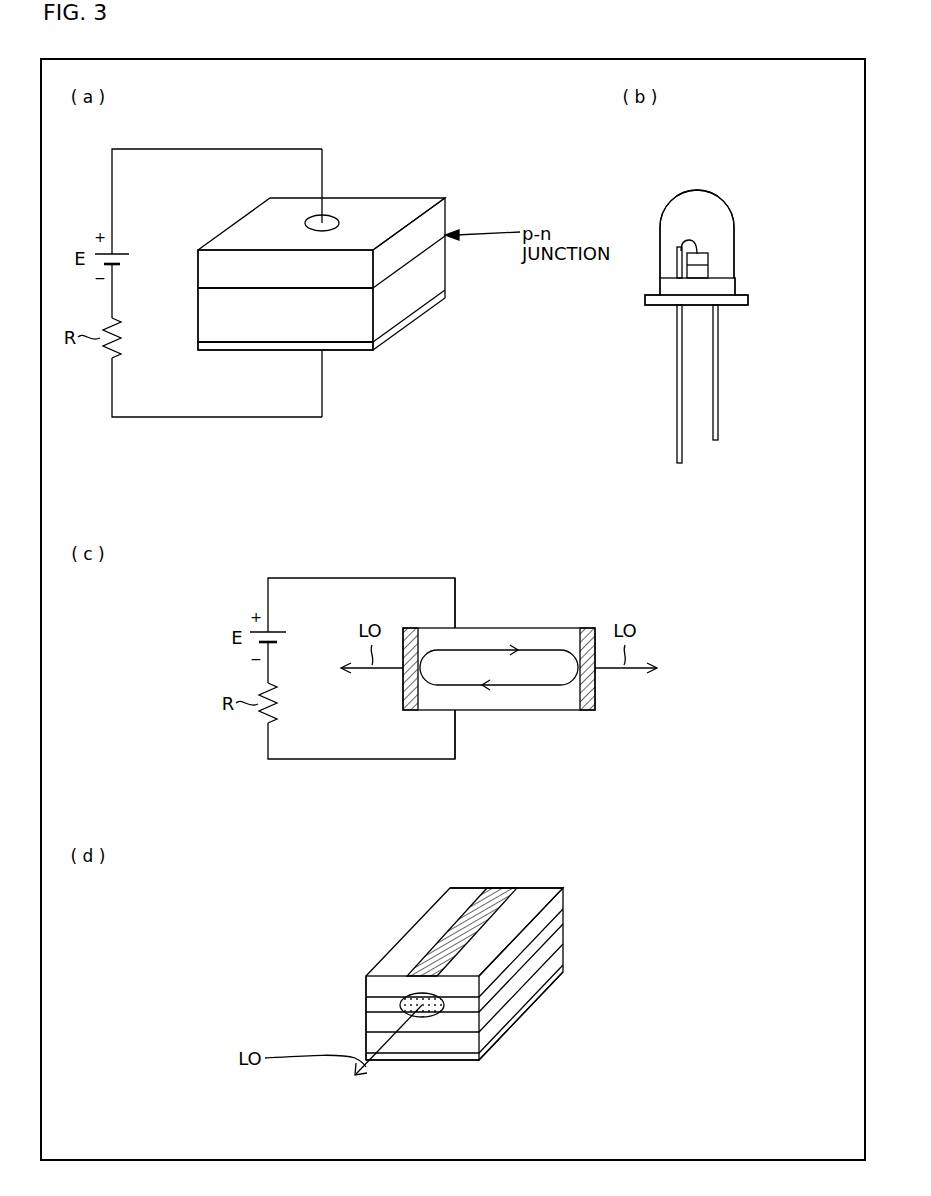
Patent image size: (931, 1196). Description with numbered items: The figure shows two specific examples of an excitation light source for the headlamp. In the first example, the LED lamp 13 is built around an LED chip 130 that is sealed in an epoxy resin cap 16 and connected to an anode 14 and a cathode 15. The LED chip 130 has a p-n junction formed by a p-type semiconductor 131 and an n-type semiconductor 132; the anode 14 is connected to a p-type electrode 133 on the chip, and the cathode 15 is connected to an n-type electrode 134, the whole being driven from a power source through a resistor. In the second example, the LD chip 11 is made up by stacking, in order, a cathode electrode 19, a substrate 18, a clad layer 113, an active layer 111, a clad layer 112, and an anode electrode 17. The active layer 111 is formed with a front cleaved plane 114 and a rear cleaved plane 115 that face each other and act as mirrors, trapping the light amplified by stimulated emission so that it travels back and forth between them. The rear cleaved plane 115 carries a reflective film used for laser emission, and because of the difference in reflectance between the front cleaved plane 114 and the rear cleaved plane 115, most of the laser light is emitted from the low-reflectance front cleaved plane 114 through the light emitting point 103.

The LD chip 11 is at (526, 593).
The LED lamp 13 is at (782, 280).
The anode 14 is at (322, 168).
The cathode 15 is at (322, 383).
The epoxy resin cap 16 is at (712, 190).
The anode electrode 17 is at (455, 601).
The substrate 18 is at (565, 958).
The cathode electrode 19 is at (455, 733).
The light emitting point 103 is at (415, 1000).
The active layer 111 is at (565, 918).
The clad layer 112 is at (565, 897).
The clad layer 113 is at (565, 938).
The front cleaved plane 114 is at (585, 628).
The rear cleaved plane 115 is at (410, 628).
The LED chip 130 is at (193, 252).
The p-type semiconductor 131 is at (445, 218).
The n-type semiconductor 132 is at (445, 275).
The p-type electrode 133 is at (320, 221).
The n-type electrode 134 is at (445, 297).